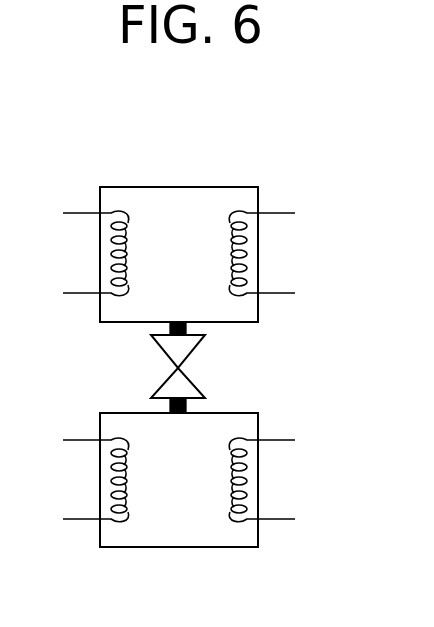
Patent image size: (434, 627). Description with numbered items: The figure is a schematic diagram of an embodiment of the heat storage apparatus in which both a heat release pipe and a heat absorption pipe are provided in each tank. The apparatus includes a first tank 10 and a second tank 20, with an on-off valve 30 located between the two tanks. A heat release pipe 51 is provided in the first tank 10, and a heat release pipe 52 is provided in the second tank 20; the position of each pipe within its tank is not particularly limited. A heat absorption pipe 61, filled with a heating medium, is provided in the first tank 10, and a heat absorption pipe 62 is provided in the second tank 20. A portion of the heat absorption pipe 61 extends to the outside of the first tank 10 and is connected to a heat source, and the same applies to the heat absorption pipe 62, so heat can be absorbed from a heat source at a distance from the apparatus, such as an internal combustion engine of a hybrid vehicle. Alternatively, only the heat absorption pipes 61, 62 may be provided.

The first tank 10 is at (186, 532).
The second tank 20 is at (172, 205).
The on-off valve 30 is at (178, 348).
The heat release pipe 51 is at (240, 525).
The heat release pipe 52 is at (238, 210).
The heat absorption pipe 61 is at (122, 525).
The heat absorption pipe 62 is at (122, 210).